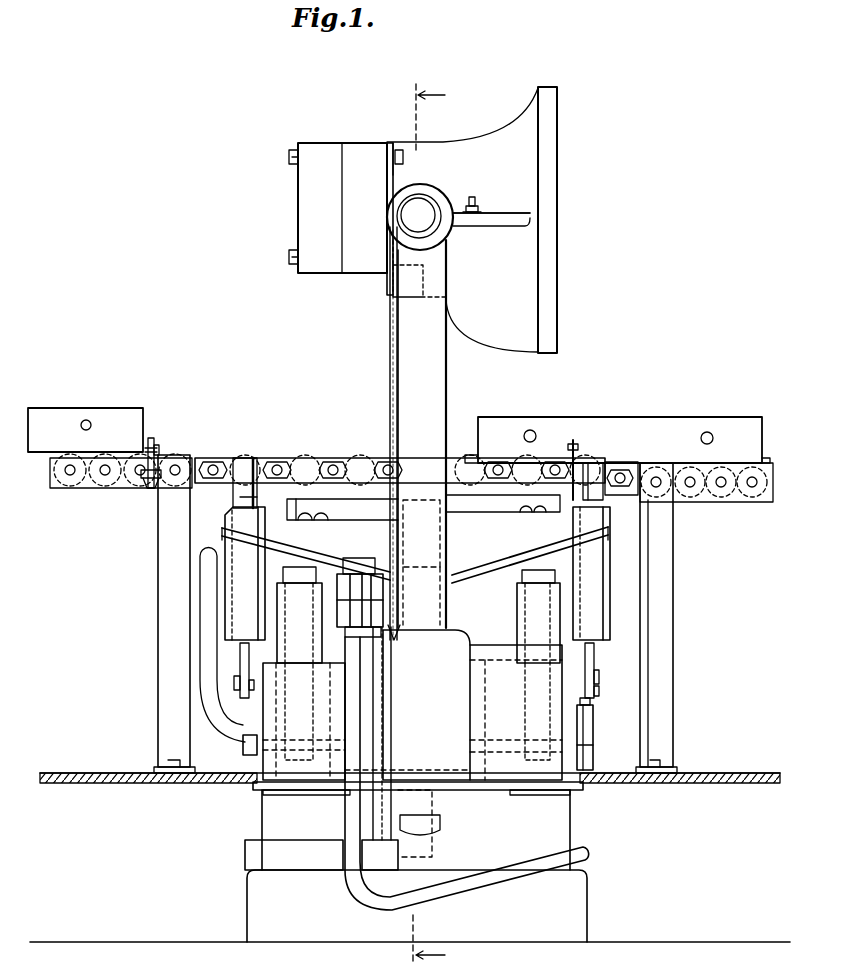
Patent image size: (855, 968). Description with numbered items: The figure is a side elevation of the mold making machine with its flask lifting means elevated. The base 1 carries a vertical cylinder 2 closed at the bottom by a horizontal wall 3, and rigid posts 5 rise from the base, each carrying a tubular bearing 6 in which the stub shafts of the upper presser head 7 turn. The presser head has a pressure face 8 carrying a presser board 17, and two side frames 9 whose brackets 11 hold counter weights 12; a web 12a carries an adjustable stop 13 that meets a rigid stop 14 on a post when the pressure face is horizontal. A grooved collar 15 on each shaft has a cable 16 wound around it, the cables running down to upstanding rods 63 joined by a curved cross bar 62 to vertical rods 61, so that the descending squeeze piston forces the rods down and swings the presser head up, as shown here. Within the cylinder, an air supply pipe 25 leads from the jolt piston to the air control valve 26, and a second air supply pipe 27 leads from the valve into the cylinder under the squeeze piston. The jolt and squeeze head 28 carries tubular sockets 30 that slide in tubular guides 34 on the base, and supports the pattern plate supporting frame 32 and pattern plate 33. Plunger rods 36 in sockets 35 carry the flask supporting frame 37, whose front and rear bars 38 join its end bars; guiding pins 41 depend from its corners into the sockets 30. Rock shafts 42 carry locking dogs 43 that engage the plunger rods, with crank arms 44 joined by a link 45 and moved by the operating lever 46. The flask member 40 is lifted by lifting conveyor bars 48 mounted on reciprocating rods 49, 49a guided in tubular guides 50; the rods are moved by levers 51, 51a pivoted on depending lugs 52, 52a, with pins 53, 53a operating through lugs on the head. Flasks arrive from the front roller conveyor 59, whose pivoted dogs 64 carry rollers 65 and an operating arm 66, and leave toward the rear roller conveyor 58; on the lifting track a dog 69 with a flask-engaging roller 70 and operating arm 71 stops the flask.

The base 1 is at (250, 906).
The vertical cylinder 2 is at (262, 812).
The horizontal wall 3 is at (427, 106).
The upstanding rigid post 5 is at (432, 386).
The tubular bearing 6 is at (434, 195).
The upper presser head 7 is at (466, 110).
The pressure face 8 is at (538, 148).
The side frame 9 is at (506, 112).
The bracket 11 is at (392, 146).
The counter weight 12 is at (326, 150).
The web 12a is at (492, 212).
The adjustable stop 13 is at (474, 198).
The rigid stop 14 is at (426, 282).
The grooved rigid collar 15 is at (414, 217).
The cable 16 is at (392, 318).
The presser board 17 is at (549, 232).
The air supply pipe 25 is at (394, 662).
The air control valve 26 is at (360, 560).
The air supply pipe 27 is at (345, 820).
The jolt and squeeze head 28 is at (468, 582).
The tubular socket 30 is at (538, 600).
The pattern plate supporting frame 32 is at (342, 510).
The pattern plate 33 is at (333, 510).
The tubular guide 34 is at (268, 712).
The vertical socket 35 is at (446, 630).
The vertical plunger rod 36 is at (495, 680).
The flask supporting frame 37 is at (504, 502).
The front and rear bar 38 is at (240, 497).
The flask member 40 is at (92, 410).
The guiding pin 41 is at (300, 566).
The rock shaft 42 is at (421, 762).
The locking dog 43 is at (486, 736).
The crank arm 44 is at (586, 736).
The link 45 is at (594, 710).
The operating lever 46 is at (215, 632).
The lifting conveyor bar 48 is at (536, 460).
The vertically reciprocating rod 49 is at (247, 458).
The vertically reciprocating rod 49a is at (606, 464).
The tubular guide 50 is at (245, 585).
The lever 51 is at (244, 665).
The lever 51a is at (592, 660).
The depending lug 52 is at (236, 681).
The depending lug 52a is at (598, 676).
The pin 53 is at (250, 690).
The pin 53a is at (598, 691).
The roller conveyor 58 is at (742, 500).
The roller conveyor 59 is at (92, 488).
The vertical rod 61 is at (420, 826).
The horizontal cross bar 62 is at (303, 858).
The upstanding rod 63 is at (345, 798).
The pivoted dog 64 is at (153, 440).
The roller 65 is at (160, 452).
The operating arm 66 is at (150, 486).
The dog 69 is at (604, 470).
The flask-engaging roller 70 is at (578, 446).
The operating arm 71 is at (649, 618).